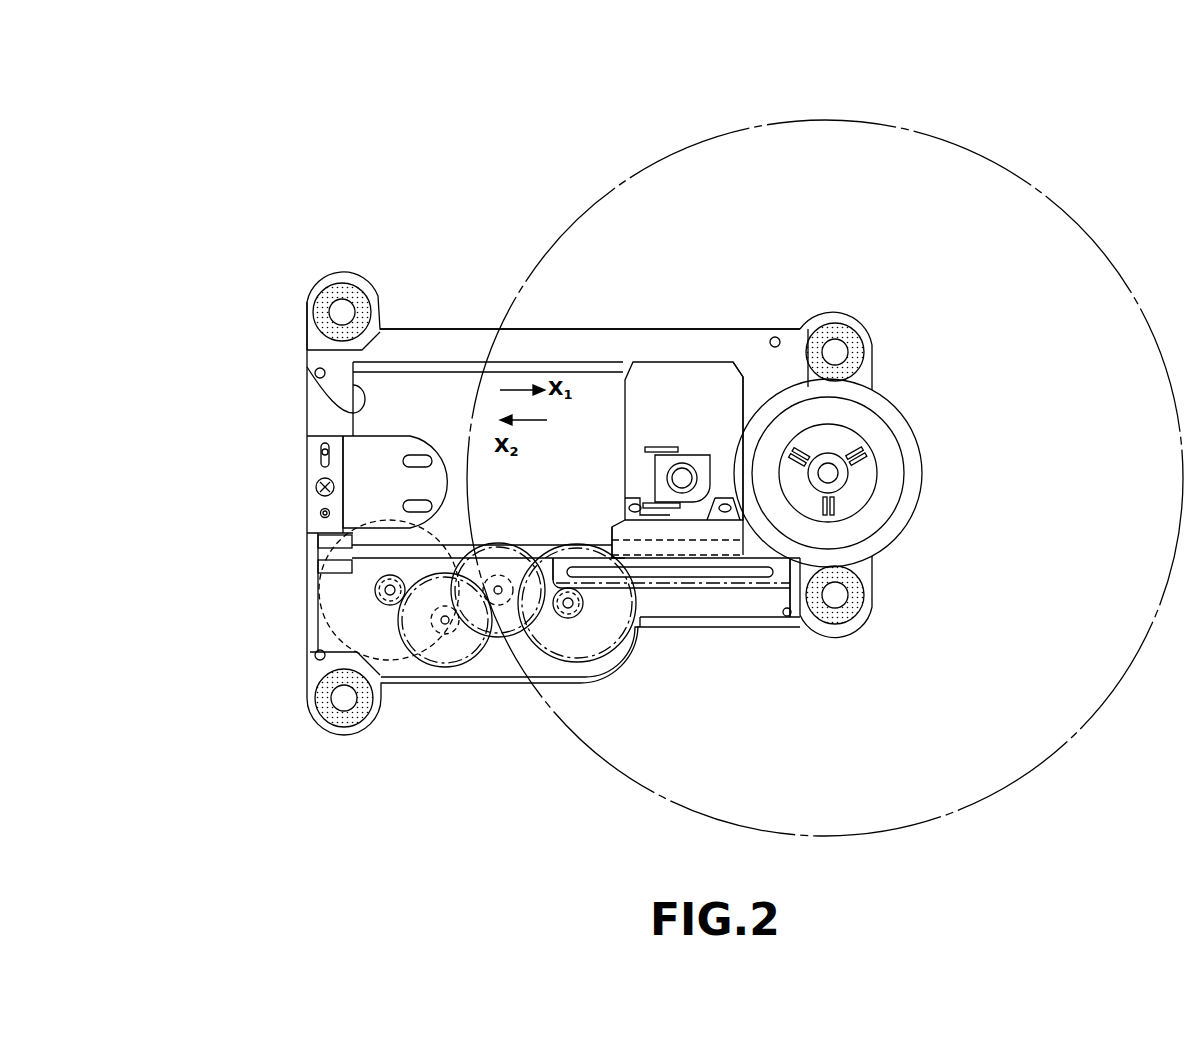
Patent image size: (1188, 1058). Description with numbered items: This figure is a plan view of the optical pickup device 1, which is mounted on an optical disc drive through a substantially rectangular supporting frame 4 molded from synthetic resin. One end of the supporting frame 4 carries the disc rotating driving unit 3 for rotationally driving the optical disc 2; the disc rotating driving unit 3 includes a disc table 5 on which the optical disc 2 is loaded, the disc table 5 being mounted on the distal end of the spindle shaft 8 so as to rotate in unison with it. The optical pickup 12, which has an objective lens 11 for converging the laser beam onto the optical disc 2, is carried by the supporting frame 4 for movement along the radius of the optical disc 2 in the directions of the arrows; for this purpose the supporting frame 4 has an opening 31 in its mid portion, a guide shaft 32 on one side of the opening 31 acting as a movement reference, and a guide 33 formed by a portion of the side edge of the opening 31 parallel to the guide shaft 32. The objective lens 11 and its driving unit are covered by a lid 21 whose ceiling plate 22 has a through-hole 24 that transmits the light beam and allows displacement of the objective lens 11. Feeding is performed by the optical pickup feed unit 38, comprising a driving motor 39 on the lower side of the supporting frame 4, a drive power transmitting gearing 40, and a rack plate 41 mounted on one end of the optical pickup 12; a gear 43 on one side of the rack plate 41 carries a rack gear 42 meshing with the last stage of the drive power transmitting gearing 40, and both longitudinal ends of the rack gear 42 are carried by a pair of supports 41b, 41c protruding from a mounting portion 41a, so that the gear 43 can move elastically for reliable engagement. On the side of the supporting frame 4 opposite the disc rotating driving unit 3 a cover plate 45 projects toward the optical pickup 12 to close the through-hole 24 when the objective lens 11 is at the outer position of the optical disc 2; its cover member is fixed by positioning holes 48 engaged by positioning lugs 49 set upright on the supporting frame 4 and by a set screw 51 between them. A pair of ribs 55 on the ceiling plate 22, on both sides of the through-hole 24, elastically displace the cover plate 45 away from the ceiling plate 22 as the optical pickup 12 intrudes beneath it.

The optical pickup device 1 is at (480, 683).
The optical disc 2 is at (1115, 680).
The disc rotating driving unit 3 is at (908, 513).
The supporting frame 4 is at (455, 329).
The disc table 5 is at (890, 410).
The spindle shaft 8 is at (833, 474).
The objective lens 11 is at (675, 478).
The optical pickup 12 is at (650, 387).
The lid 21 is at (718, 375).
The ceiling plate 22 is at (632, 422).
The through-hole 24 is at (660, 492).
The opening 31 is at (352, 410).
The guide shaft 32 is at (368, 566).
The guide 33 is at (442, 372).
The optical pickup feed unit 38 is at (437, 660).
The driving motor 39 is at (325, 630).
The drive power transmitting gearing 40 is at (487, 647).
The rack plate 41 is at (725, 562).
The mounting portion 41a is at (626, 531).
The support 41b is at (778, 580).
The support 41c is at (555, 568).
The rack gear 42 is at (707, 588).
The gear 43 is at (675, 586).
The cover plate 45 is at (330, 434).
The positioning hole 48 is at (318, 463).
The positioning lug 49 is at (318, 452).
The set screw 51 is at (314, 487).
The rib 55 is at (665, 445).